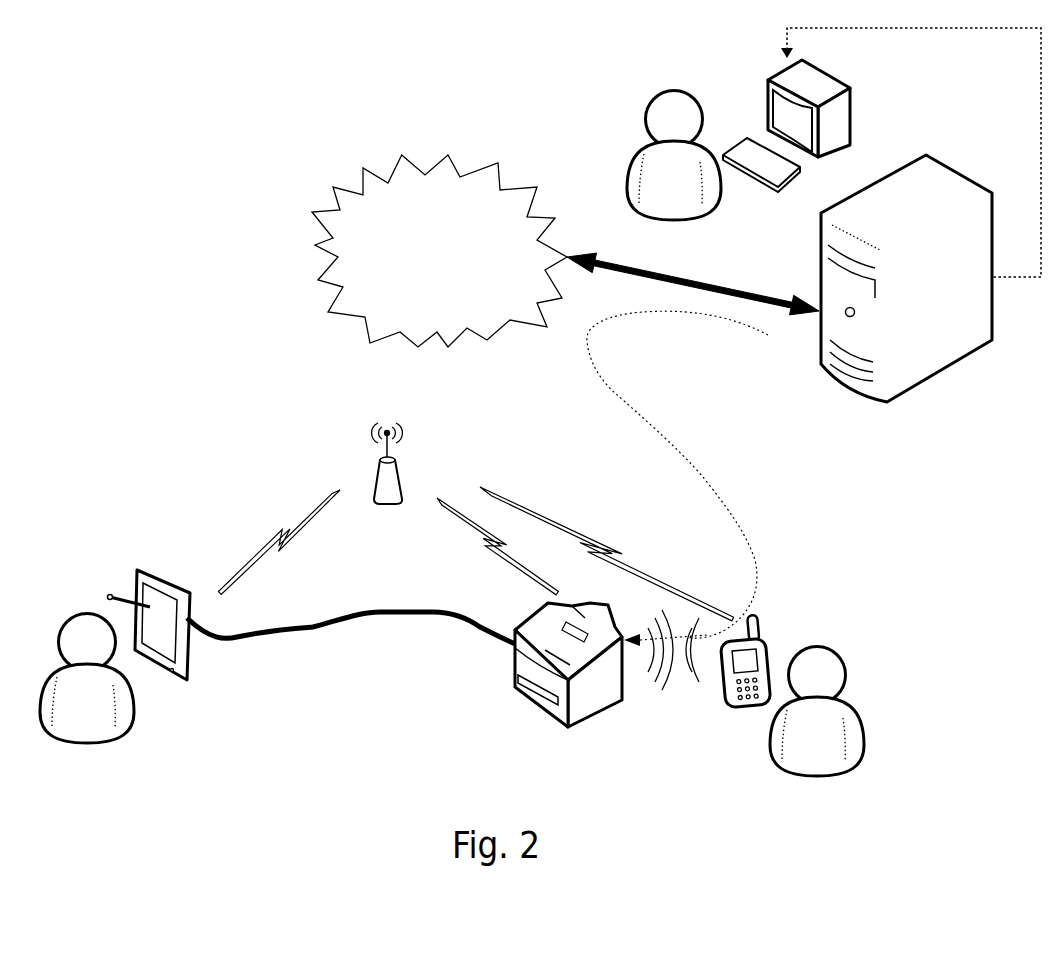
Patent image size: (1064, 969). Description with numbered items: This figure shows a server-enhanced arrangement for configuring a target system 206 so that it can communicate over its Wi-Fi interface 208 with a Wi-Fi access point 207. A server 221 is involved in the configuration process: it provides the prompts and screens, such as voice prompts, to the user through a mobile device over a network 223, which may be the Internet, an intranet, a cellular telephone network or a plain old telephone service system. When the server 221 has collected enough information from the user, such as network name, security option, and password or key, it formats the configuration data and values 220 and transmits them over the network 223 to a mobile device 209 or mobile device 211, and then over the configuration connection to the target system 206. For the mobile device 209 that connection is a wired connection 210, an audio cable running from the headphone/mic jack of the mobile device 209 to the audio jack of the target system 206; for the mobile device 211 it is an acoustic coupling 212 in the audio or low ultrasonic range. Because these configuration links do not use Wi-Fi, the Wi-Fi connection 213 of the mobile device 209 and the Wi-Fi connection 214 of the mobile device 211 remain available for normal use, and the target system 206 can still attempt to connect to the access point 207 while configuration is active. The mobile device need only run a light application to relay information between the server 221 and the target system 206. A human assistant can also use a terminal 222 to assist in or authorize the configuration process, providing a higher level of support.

The target system 206 is at (513, 690).
The Wi-Fi access point 207 is at (402, 488).
The Wi-Fi interface 208 is at (450, 523).
The mobile device 209 is at (193, 653).
The wired connection 210 is at (403, 617).
The mobile device 211 is at (768, 635).
The acoustic coupling 212 is at (650, 693).
The Wi-Fi connection 213 is at (265, 497).
The Wi-Fi connection 214 is at (593, 527).
The configuration data and values 220 is at (699, 474).
The server 221 is at (927, 385).
The terminal 222 is at (853, 111).
The network 223 is at (460, 285).